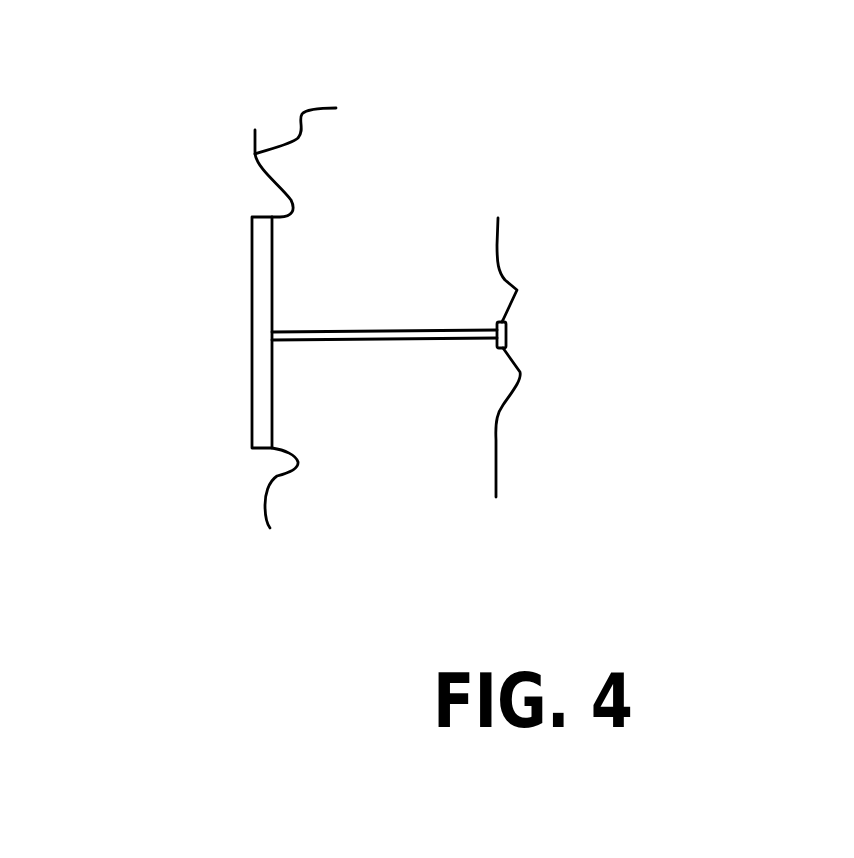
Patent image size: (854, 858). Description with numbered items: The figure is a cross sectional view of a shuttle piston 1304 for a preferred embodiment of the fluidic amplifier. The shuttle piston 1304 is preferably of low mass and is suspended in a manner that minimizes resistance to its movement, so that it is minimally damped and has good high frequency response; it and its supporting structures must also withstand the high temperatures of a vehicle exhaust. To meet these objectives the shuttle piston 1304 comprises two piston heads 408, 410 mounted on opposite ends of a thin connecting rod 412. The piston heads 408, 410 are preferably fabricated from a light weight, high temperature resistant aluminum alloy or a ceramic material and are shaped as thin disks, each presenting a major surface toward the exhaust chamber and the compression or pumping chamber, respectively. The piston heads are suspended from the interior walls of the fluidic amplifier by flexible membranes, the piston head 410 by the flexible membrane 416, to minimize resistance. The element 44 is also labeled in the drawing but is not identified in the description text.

The panel 44 is at (324, 306).
The piston head 408 is at (252, 395).
The piston head 410 is at (506, 334).
The connecting rod 412 is at (373, 340).
The flexible membrane 416 is at (497, 462).
The shuttle piston 1304 is at (425, 187).